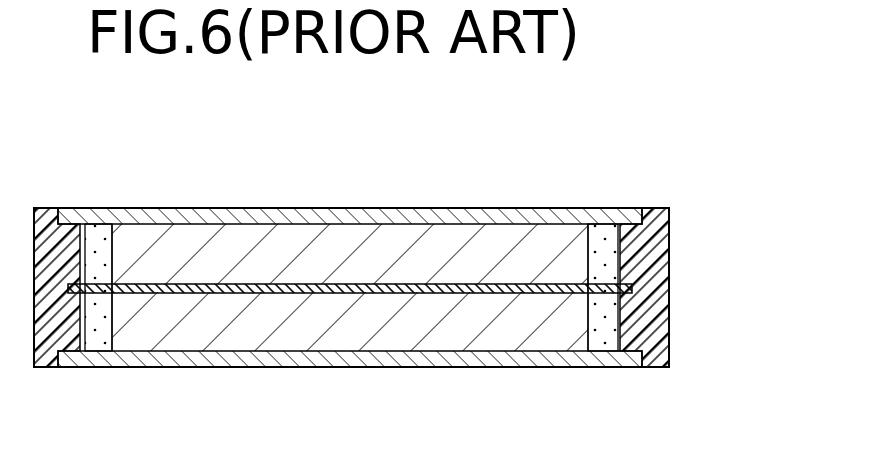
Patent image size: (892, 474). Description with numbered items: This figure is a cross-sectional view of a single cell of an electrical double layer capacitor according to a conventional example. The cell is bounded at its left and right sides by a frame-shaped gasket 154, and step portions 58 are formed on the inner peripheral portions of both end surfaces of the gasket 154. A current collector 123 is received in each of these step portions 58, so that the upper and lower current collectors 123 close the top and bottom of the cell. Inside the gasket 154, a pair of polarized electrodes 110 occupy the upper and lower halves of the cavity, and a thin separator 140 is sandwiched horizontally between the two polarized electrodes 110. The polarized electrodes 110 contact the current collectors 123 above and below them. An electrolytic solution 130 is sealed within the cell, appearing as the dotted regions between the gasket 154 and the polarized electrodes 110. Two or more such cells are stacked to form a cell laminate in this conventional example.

The step portion 58 is at (637, 221).
The polarized electrode 110 is at (230, 340).
The current collector 123 is at (410, 357).
The electrolytic solution 130 is at (602, 342).
The separator 140 is at (457, 284).
The gasket 154 is at (665, 283).